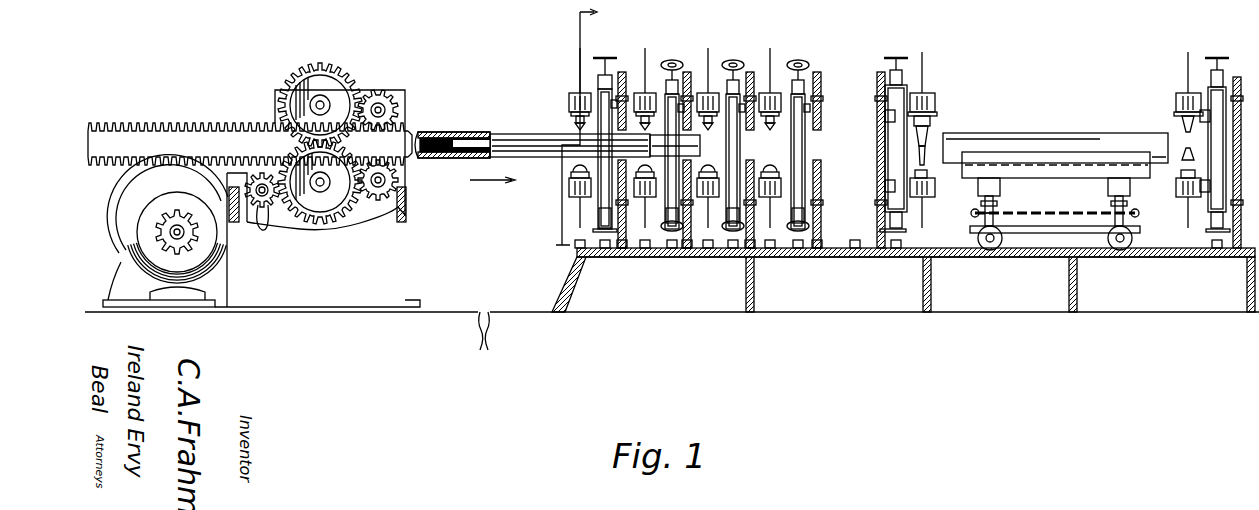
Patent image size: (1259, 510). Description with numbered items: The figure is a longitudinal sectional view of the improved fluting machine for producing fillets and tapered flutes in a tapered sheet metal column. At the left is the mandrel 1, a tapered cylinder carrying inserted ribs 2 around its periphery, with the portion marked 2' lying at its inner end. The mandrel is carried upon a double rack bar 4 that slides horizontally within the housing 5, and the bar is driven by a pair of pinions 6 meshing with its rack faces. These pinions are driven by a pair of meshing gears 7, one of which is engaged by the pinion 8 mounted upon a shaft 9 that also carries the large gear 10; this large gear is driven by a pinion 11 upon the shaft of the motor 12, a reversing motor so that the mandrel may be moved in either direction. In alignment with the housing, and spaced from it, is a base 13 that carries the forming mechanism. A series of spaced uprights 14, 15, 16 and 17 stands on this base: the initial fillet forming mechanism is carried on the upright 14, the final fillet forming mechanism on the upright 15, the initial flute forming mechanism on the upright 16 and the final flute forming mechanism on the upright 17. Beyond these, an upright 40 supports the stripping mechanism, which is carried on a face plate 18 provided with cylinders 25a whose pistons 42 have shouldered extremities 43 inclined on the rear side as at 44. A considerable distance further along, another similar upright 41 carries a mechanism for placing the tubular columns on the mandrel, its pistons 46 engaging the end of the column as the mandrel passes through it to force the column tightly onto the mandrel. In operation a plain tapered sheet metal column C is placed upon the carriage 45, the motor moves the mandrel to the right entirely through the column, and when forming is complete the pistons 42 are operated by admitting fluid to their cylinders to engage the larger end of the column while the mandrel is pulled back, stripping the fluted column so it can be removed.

The mandrel 1 is at (474, 134).
The ribs 2 is at (582, 130).
The coupling sleeve 2' is at (452, 157).
The double rack bar 4 is at (172, 128).
The housing 5 is at (402, 239).
The pinions 6 is at (394, 109).
The meshing gears 7 is at (342, 78).
The pinion 8 is at (266, 222).
The shaft 9 is at (257, 205).
The large gear 10 is at (225, 197).
The pinion 11 is at (168, 222).
The motor 12 is at (120, 230).
The base 13 is at (573, 289).
The upright 14 is at (622, 70).
The upright 15 is at (688, 72).
The upright 16 is at (752, 72).
The upright 17 is at (818, 72).
The face plate 18 is at (892, 120).
The cylinders 25a is at (937, 102).
The upright 40 is at (879, 72).
The upright 41 is at (1238, 77).
The pistons 42 is at (931, 124).
The shouldered extremities 43 is at (929, 137).
The inclined rear side 44 is at (915, 155).
The carriage 45 is at (1068, 172).
The pistons 46 is at (1176, 118).
The sheet metal column C is at (1052, 132).